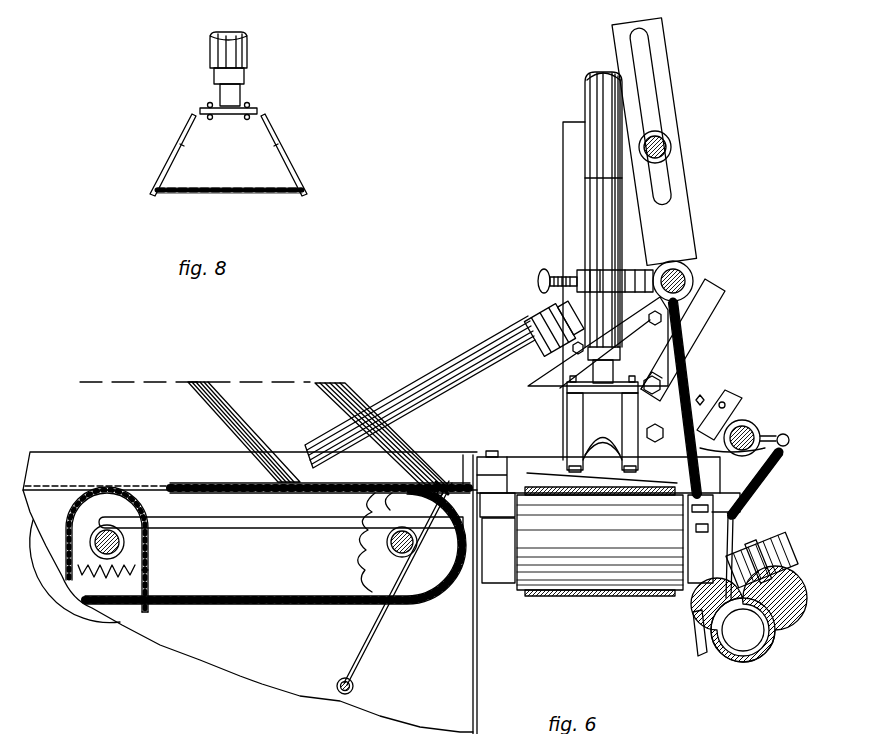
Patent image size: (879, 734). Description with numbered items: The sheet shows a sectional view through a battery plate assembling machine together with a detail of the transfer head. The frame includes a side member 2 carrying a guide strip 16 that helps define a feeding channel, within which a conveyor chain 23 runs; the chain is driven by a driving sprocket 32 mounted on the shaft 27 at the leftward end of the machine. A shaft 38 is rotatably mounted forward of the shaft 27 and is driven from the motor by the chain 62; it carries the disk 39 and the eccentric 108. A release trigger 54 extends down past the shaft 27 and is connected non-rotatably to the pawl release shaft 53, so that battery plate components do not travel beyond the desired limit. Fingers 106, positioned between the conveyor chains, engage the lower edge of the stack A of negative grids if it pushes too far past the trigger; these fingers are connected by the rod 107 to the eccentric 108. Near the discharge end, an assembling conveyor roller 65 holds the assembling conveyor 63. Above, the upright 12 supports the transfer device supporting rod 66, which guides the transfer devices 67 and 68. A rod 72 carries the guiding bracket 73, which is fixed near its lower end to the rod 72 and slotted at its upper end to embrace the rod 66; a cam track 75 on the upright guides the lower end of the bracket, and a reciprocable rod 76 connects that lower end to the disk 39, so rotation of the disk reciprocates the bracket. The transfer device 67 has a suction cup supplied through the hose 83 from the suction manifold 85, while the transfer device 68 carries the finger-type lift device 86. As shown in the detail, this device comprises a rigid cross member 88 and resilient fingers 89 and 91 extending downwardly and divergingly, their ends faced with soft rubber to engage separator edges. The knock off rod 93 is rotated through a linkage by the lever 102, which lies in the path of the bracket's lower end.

In FIG. 6, the side member 2 is at (246, 644).
In FIG. 6, the upright 12 is at (570, 130).
In FIG. 6, the guide strip 16 is at (123, 462).
In FIG. 6, the conveyor chain 23 is at (178, 482).
In FIG. 6, the shaft 27 is at (352, 536).
In FIG. 6, the driving sprocket 32 is at (365, 553).
In FIG. 6, the shaft 38 is at (118, 548).
In FIG. 6, the disk 39 is at (72, 592).
In FIG. 6, the pawl release shaft 53 is at (338, 678).
In FIG. 6, the release trigger 54 is at (372, 642).
In FIG. 6, the chain 62 is at (146, 573).
In FIG. 6, the assembling conveyor 63 is at (550, 598).
In FIG. 6, the assembling conveyor roller 65 is at (644, 590).
In FIG. 6, the transfer device supporting rod 66 is at (672, 150).
In FIG. 6, the transfer device 67 is at (593, 152).
In FIG. 8, the transfer device 68 is at (248, 52).
In FIG. 6, the transfer device 68 is at (600, 247).
In FIG. 6, the rod 72 is at (683, 272).
In FIG. 6, the guiding bracket 73 is at (665, 80).
In FIG. 6, the cam track 75 is at (545, 370).
In FIG. 6, the reciprocable rod 76 is at (492, 356).
In FIG. 6, the hose 83 is at (752, 538).
In FIG. 6, the suction manifold 85 is at (745, 660).
In FIG. 6, the finger-type lift device 86 is at (575, 440).
In FIG. 8, the cross member 88 is at (258, 108).
In FIG. 8, the resilient finger 89 is at (295, 160).
In FIG. 8, the resilient finger 91 is at (170, 160).
In FIG. 6, the knock off rod 93 is at (745, 430).
In FIG. 6, the lever 102 is at (712, 292).
In FIG. 6, the finger 106 is at (466, 480).
In FIG. 6, the rod 107 is at (240, 525).
In FIG. 6, the eccentric 108 is at (92, 530).
In FIG. 6, the stack of negative grids A is at (336, 375).